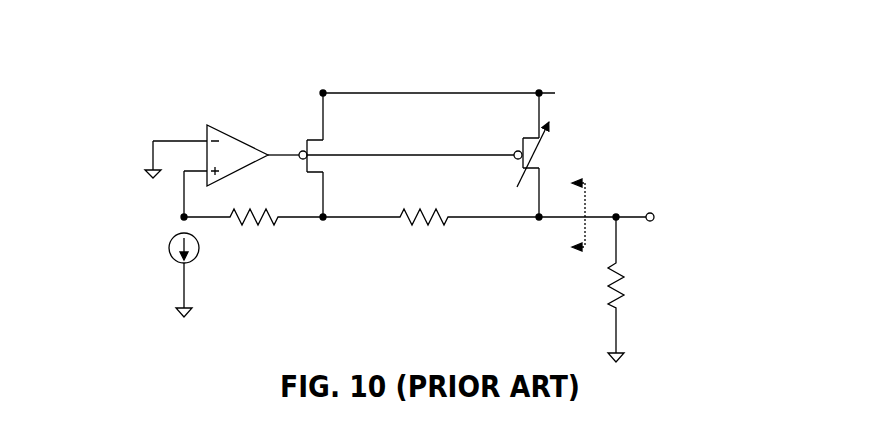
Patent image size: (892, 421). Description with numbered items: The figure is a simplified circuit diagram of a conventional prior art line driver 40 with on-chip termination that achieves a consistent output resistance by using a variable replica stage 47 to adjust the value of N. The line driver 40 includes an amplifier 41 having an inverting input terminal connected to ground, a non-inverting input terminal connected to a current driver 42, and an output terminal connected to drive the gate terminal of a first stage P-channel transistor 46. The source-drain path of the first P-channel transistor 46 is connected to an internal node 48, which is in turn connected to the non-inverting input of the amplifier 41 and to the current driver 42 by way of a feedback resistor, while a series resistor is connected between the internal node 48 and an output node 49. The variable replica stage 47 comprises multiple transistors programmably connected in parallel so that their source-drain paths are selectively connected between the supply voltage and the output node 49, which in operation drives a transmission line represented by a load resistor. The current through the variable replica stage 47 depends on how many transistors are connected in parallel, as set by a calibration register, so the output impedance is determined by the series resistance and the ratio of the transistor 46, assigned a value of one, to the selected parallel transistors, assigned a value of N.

The line driver 40 is at (245, 60).
The amplifier 41 is at (190, 118).
The current driver 42 is at (163, 232).
The first stage P-channel transistor 46 is at (295, 137).
The variable replica stage 47 is at (510, 140).
The internal node 48 is at (323, 219).
The output node 49 is at (539, 219).